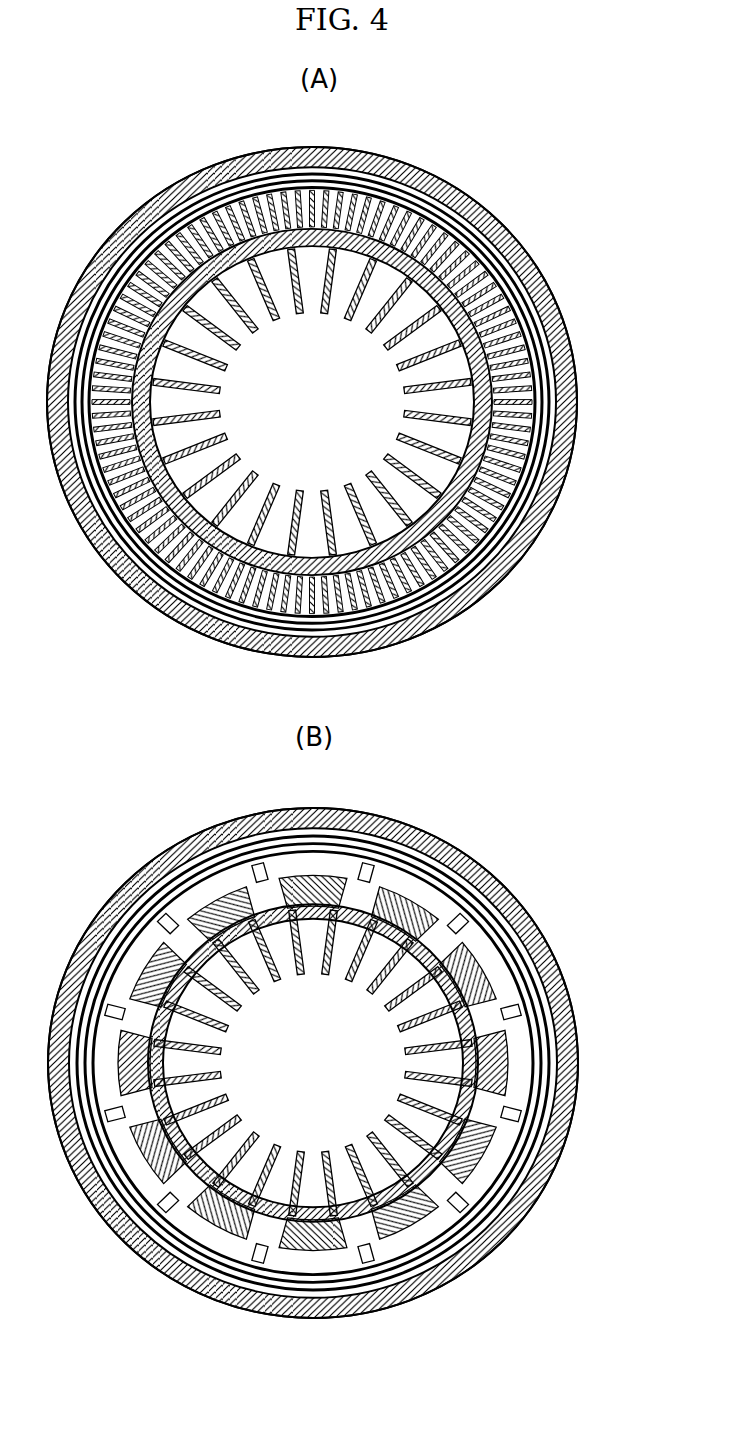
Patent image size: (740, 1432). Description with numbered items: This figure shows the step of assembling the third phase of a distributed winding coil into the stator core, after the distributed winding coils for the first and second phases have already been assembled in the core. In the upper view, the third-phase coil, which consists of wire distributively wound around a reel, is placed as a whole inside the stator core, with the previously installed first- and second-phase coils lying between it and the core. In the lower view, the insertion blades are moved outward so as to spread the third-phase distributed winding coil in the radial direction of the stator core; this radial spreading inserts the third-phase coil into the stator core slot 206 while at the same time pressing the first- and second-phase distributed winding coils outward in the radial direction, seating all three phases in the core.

The stator core slot 206 is at (505, 905).